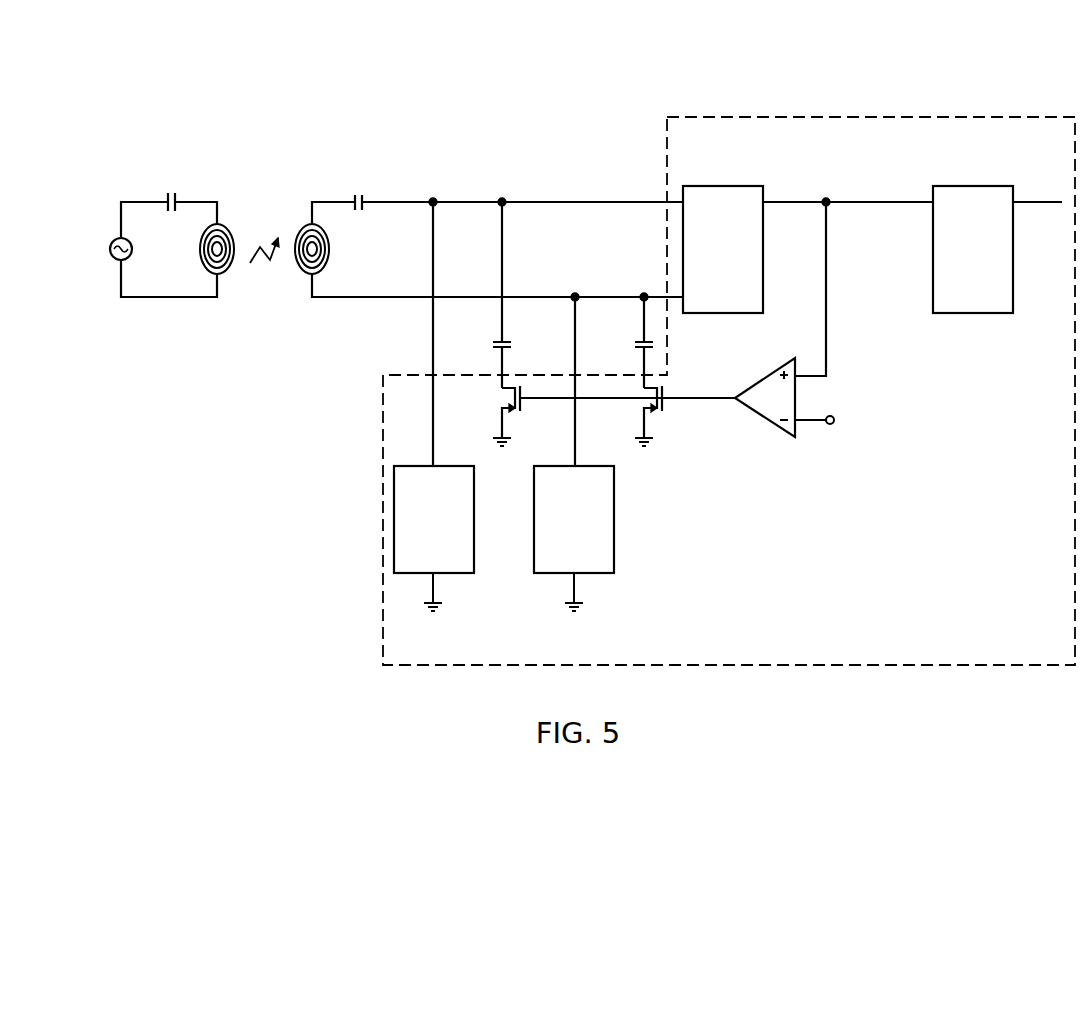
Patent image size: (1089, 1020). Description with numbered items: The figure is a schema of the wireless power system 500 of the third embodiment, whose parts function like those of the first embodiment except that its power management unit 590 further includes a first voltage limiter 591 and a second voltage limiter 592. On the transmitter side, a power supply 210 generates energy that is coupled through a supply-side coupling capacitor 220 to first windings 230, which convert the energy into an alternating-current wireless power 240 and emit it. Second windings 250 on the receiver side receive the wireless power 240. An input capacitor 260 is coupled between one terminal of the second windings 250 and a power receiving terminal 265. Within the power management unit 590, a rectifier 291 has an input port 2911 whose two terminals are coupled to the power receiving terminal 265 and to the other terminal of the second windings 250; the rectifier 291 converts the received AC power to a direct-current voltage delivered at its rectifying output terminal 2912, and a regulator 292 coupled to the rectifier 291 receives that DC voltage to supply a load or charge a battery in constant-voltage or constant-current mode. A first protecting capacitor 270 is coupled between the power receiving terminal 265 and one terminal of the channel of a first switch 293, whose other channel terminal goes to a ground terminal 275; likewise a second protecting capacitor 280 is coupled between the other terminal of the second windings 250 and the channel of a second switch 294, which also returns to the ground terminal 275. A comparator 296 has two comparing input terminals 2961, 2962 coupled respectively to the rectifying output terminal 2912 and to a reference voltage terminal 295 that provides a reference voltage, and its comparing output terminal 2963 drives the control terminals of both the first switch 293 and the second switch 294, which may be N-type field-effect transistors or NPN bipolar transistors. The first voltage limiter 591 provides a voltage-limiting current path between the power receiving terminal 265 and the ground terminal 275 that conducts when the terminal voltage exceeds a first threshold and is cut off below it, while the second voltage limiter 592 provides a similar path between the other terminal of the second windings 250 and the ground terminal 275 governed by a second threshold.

The wireless power system 500 is at (69, 88).
The power supply 210 is at (109, 238).
The supply-side coupling capacitor 220 is at (176, 200).
The first windings 230 is at (220, 276).
The wireless power 240 is at (267, 272).
The second windings 250 is at (309, 276).
The input capacitor 260 is at (354, 200).
The power receiving terminal 265 is at (502, 200).
The first protecting capacitor 270 is at (510, 340).
The second protecting capacitor 280 is at (637, 340).
The ground terminal 275 is at (500, 448).
The rectifier 291 is at (706, 283).
The regulator 292 is at (956, 293).
The first switch 293 is at (508, 412).
The second switch 294 is at (650, 412).
The reference voltage terminal 295 is at (834, 425).
The comparator 296 is at (785, 406).
The input port 2911 is at (682, 204).
The rectifying output terminal 2912 is at (764, 200).
The comparing input terminal 2961 is at (791, 362).
The comparing input terminal 2962 is at (797, 426).
The comparing output terminal 2963 is at (735, 403).
The power management unit 590 is at (690, 148).
The first voltage limiter 591 is at (416, 567).
The second voltage limiter 592 is at (557, 567).